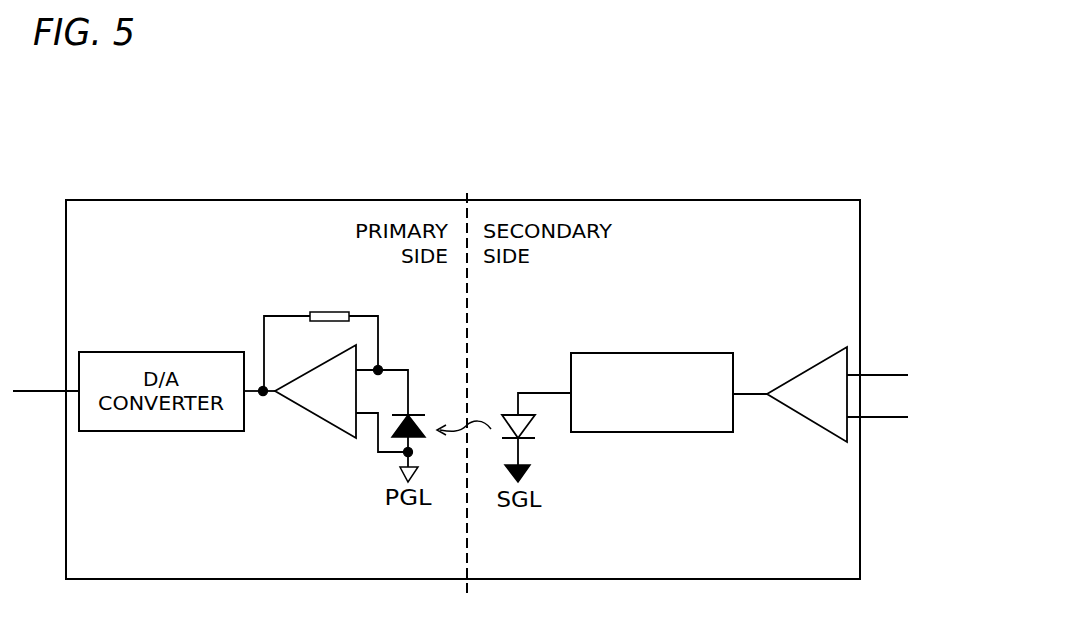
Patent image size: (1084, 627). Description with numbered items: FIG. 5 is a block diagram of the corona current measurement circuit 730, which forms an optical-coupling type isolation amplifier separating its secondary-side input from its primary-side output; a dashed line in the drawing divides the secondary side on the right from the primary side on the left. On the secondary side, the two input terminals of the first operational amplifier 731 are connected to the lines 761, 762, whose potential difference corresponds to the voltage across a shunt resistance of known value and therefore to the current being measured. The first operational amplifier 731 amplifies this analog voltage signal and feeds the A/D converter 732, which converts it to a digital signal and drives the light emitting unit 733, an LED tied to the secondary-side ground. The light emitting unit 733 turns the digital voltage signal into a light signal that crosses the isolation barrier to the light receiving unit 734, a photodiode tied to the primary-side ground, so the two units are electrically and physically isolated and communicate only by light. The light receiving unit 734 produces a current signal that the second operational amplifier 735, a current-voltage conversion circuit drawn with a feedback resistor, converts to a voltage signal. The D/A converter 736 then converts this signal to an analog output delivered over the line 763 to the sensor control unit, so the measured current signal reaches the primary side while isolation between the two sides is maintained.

The corona current measurement circuit 730 is at (797, 202).
The first operational amplifier 731 is at (808, 368).
The A/D converter 732 is at (680, 353).
The light emitting unit 733 is at (532, 425).
The light receiving unit 734 is at (427, 423).
The second operational amplifier 735 is at (300, 410).
The D/A converter 736 is at (188, 352).
The line 761 is at (888, 375).
The line 762 is at (887, 428).
The line 763 is at (40, 388).